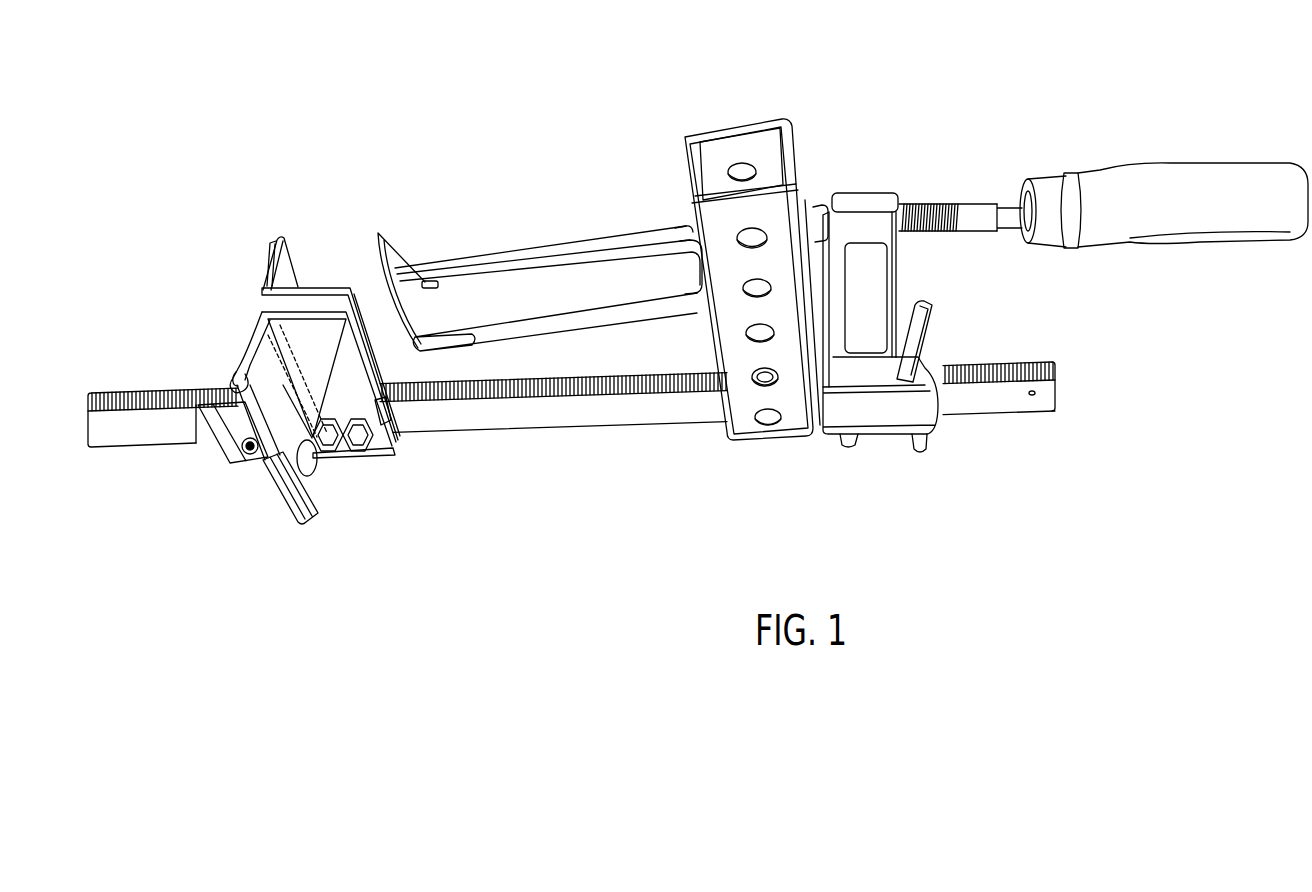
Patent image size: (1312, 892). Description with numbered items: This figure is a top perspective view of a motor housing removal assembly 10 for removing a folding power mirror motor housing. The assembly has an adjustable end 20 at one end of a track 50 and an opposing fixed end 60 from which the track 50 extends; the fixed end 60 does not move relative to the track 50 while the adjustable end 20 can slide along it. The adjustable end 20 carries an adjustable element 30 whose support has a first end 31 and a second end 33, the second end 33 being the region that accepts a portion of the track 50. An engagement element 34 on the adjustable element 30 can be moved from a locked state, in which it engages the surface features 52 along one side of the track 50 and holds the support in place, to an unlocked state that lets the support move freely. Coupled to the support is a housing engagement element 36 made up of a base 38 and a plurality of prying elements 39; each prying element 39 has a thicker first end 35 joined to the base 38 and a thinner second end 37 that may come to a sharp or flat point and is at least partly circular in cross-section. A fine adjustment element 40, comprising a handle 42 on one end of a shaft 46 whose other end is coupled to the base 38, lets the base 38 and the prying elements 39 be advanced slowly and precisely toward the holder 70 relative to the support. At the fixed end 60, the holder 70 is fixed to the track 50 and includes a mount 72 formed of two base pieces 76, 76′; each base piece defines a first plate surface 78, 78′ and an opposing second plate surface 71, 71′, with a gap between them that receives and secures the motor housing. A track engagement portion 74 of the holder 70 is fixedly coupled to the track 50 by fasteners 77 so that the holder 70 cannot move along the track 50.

The motor housing removal assembly 10 is at (207, 83).
The adjustable end 20 is at (965, 446).
The adjustable element 30 is at (858, 499).
The first end 31 is at (868, 172).
The second end 33 is at (892, 453).
The engagement element 34 is at (938, 322).
The first end 35 is at (671, 219).
The housing engagement element 36 is at (730, 97).
The second end 37 is at (379, 235).
The base 38 is at (790, 126).
The prying elements 39 is at (532, 231).
The fine adjustment element 40 is at (941, 175).
The handle 42 is at (1175, 165).
The shaft 46 is at (985, 236).
The track 50 is at (547, 447).
The surface features 52 is at (1056, 372).
The fixed end 60 is at (315, 211).
The holder 70 is at (295, 533).
The second plate surface 71 is at (270, 243).
The second plate surface 71′ is at (226, 366).
The mount 72 is at (270, 483).
The track engagement portion 74 is at (363, 448).
The base piece 76 is at (315, 283).
The base piece 76′ is at (361, 403).
The fasteners 77 is at (373, 452).
The first plate surface 78 is at (265, 283).
The first plate surface 78′ is at (250, 346).